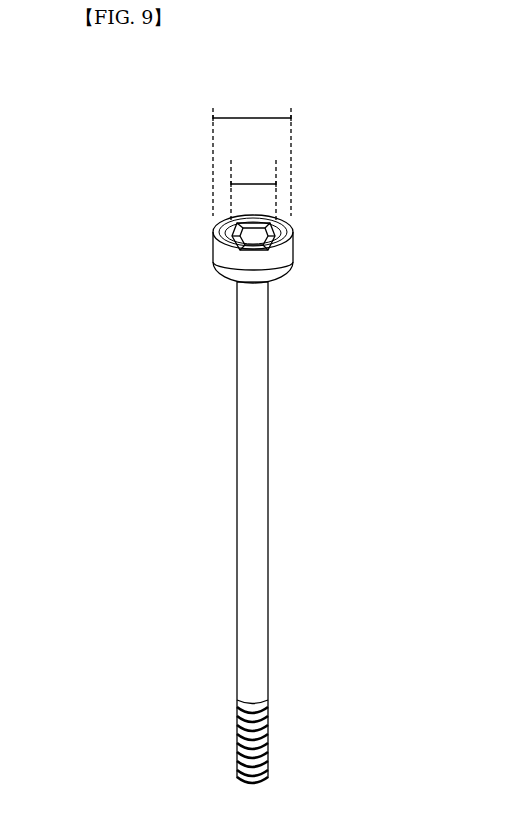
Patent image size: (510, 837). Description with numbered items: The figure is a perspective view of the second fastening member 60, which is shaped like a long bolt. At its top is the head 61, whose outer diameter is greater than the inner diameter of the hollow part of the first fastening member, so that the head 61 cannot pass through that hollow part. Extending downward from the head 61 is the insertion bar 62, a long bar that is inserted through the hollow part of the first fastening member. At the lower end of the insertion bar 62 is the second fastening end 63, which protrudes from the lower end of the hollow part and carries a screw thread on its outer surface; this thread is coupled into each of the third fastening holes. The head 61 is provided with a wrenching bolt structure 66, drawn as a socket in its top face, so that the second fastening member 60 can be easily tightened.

The second fastening member 60 is at (110, 135).
The head 61 is at (293, 258).
The insertion bar 62 is at (268, 468).
The second fastening end 63 is at (268, 758).
The wrenching bolt structure 66 is at (245, 233).